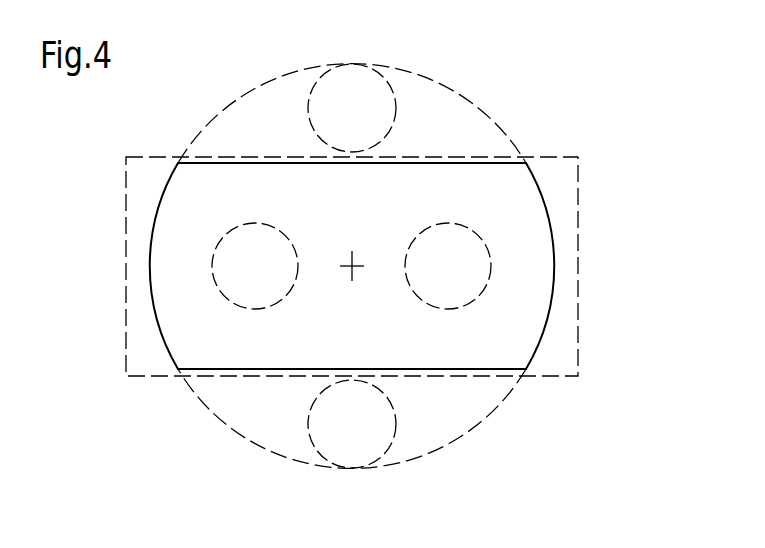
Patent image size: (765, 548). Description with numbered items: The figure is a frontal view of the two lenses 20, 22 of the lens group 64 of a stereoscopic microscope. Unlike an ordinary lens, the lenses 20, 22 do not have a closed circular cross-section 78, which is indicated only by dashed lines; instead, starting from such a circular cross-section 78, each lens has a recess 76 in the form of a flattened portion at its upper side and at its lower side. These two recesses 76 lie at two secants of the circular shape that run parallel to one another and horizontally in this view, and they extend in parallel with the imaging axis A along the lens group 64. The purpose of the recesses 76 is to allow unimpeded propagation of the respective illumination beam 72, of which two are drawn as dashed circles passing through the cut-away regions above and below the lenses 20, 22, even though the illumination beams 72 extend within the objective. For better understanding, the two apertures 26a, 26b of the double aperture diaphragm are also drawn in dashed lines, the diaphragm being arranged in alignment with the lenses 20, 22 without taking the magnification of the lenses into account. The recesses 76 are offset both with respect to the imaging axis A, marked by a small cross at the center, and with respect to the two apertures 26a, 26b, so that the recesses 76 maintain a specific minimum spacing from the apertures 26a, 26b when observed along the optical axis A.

The lens 20 is at (417, 277).
The lens 22 is at (417, 277).
The aperture 26a is at (212, 272).
The aperture 26b is at (488, 283).
The lens group 64 is at (579, 258).
The illumination beam 72 is at (371, 70).
The recess 76 is at (222, 162).
The circular cross-section 78 is at (492, 117).
The imaging axis A is at (348, 262).